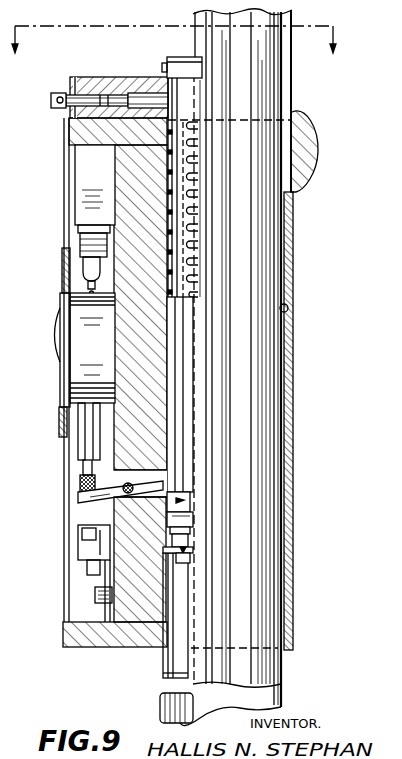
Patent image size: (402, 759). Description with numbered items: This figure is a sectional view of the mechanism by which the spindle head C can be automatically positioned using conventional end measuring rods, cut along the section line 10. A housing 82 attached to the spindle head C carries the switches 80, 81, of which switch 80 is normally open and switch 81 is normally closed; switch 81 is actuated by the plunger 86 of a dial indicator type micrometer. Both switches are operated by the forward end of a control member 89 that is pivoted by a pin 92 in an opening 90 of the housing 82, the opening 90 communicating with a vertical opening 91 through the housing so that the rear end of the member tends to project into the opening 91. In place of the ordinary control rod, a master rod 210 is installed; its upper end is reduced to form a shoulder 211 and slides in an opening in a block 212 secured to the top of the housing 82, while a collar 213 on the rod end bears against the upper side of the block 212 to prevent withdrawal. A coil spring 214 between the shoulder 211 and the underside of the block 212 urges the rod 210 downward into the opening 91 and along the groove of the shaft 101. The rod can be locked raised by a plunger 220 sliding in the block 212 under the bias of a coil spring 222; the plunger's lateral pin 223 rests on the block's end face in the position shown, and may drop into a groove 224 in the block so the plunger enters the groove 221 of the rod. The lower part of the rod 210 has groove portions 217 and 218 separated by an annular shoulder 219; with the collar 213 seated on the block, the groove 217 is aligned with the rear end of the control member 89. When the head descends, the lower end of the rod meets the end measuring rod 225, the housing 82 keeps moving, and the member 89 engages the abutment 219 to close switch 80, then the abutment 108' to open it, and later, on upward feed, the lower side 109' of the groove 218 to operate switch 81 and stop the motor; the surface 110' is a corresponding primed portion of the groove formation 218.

The section line 10 is at (169, 51).
The groove 224 is at (66, 90).
The block 212 is at (130, 92).
The collar 213 is at (167, 64).
The spindle head C is at (320, 145).
The groove 221 is at (197, 153).
The coil spring 214 is at (197, 188).
The pin 223 is at (60, 102).
The coil spring 222 is at (100, 110).
The plunger 220 is at (115, 370).
The switch 81 is at (82, 201).
The shoulder 211 is at (168, 288).
The master rod 210 is at (172, 365).
The vertical opening 91 is at (289, 308).
The shaft 101 is at (270, 370).
The control member 89 is at (143, 487).
The plunger 86 is at (80, 483).
The pin 92 is at (128, 490).
The switch 80 is at (78, 542).
The opening 90 is at (140, 559).
The groove portion 217 is at (187, 498).
The annular shoulder 219 is at (193, 510).
The abutment 108' is at (253, 518).
The groove portion 218 is at (183, 538).
The plate 110' is at (249, 551).
The lower side 109' is at (256, 566).
The housing 82 is at (76, 635).
The end measuring rod 225 is at (162, 702).